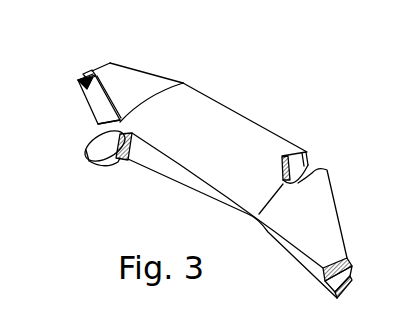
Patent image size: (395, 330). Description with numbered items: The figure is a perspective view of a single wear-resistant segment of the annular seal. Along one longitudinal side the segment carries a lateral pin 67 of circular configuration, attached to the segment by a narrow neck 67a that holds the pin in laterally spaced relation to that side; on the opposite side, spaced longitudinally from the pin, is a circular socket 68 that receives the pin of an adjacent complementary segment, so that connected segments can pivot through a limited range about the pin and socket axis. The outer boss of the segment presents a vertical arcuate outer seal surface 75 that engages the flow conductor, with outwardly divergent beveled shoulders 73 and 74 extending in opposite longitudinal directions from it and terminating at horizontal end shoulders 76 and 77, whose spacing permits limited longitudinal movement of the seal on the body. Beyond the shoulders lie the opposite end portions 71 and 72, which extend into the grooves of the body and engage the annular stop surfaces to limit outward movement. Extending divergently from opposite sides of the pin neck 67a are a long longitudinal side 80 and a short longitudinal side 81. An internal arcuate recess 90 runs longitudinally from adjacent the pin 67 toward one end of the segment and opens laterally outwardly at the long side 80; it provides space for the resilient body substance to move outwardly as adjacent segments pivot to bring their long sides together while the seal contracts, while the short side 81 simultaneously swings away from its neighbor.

The pin 67 is at (104, 152).
The neck 67a is at (98, 124).
The circular socket 68 is at (283, 165).
The end portion 71 is at (342, 283).
The end portion 72 is at (90, 68).
The beveled shoulder 73 is at (297, 237).
The beveled shoulder 74 is at (140, 55).
The arcuate outer seal surface 75 is at (254, 97).
The horizontal end shoulder 76 is at (342, 272).
The horizontal end shoulder 77 is at (85, 80).
The long longitudinal side 80 is at (197, 182).
The short longitudinal side 81 is at (90, 105).
The internal arcuate recess 90 is at (250, 215).